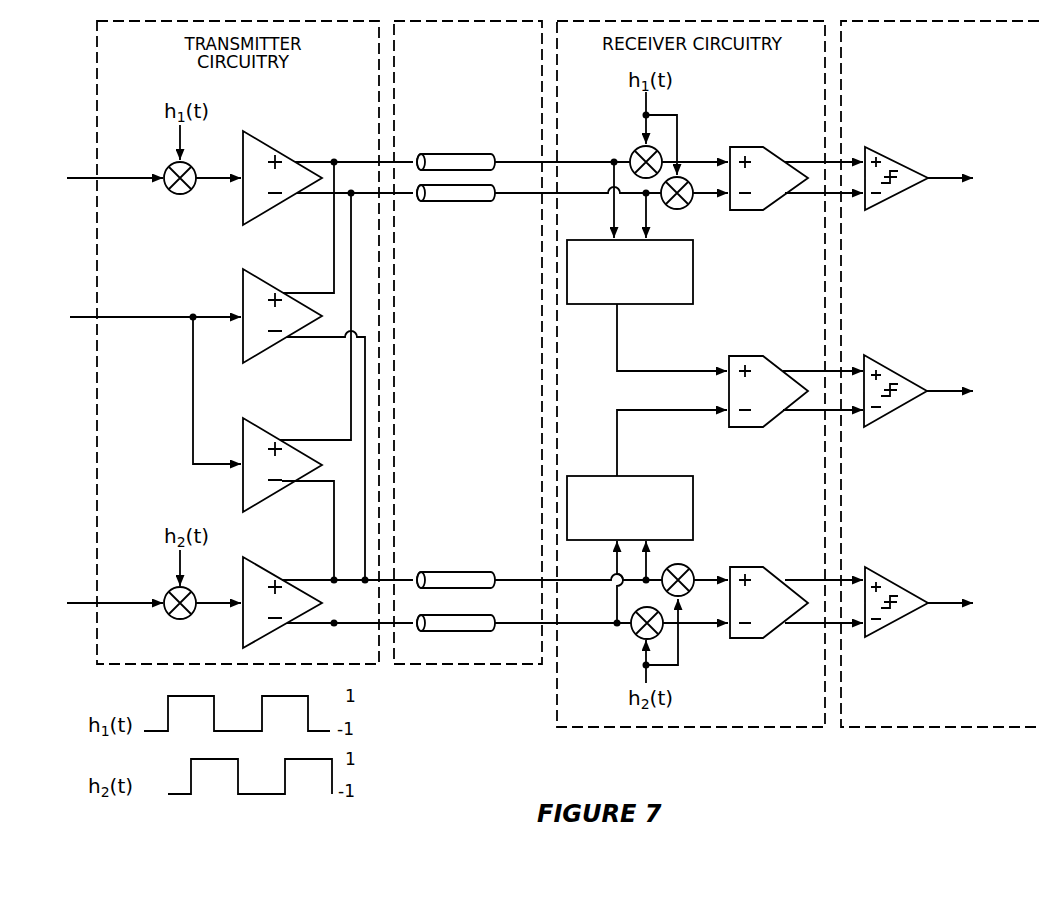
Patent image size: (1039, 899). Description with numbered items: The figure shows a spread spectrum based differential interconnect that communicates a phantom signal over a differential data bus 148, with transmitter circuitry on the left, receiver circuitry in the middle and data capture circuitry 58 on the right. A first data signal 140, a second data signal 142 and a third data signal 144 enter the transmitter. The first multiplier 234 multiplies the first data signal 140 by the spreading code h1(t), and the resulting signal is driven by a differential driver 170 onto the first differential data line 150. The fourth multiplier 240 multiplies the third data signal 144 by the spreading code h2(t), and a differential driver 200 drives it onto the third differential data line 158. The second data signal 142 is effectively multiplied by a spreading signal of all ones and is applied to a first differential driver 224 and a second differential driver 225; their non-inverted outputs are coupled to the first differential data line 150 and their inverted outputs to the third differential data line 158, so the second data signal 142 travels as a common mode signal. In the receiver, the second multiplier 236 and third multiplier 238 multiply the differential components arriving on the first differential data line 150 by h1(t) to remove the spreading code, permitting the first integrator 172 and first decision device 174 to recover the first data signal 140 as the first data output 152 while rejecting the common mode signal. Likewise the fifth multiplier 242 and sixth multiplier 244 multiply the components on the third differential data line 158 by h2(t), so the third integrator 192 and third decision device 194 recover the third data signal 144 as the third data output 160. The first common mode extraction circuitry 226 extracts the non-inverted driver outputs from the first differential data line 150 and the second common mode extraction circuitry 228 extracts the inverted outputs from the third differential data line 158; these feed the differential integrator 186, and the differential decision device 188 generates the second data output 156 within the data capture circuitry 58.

The data capture circuitry 58 is at (942, 95).
The first data signal 140 is at (110, 177).
The second data signal 142 is at (176, 316).
The third data signal 144 is at (110, 602).
The differential data bus 148 is at (461, 96).
The first differential data line 150 is at (458, 186).
The first data output 152 is at (942, 176).
The second data output 156 is at (942, 389).
The third differential data line 158 is at (458, 613).
The third data output 160 is at (942, 601).
The first differential driver 170 is at (267, 141).
The first integrator 172 is at (743, 146).
The first decision device 174 is at (896, 158).
The differential integrator 186 is at (742, 356).
The differential decision device 188 is at (896, 371).
The third integrator 192 is at (742, 566).
The third decision device 194 is at (896, 583).
The third differential driver 200 is at (267, 566).
The first differential driver 224 is at (267, 433).
The second differential driver 225 is at (267, 279).
The first common mode extraction circuitry 226 is at (693, 259).
The second common mode extraction circuitry 228 is at (693, 486).
The first multiplier 234 is at (180, 195).
The second multiplier 236 is at (636, 150).
The third multiplier 238 is at (683, 207).
The fourth multiplier 240 is at (170, 617).
The fifth multiplier 242 is at (688, 568).
The sixth multiplier 244 is at (635, 637).